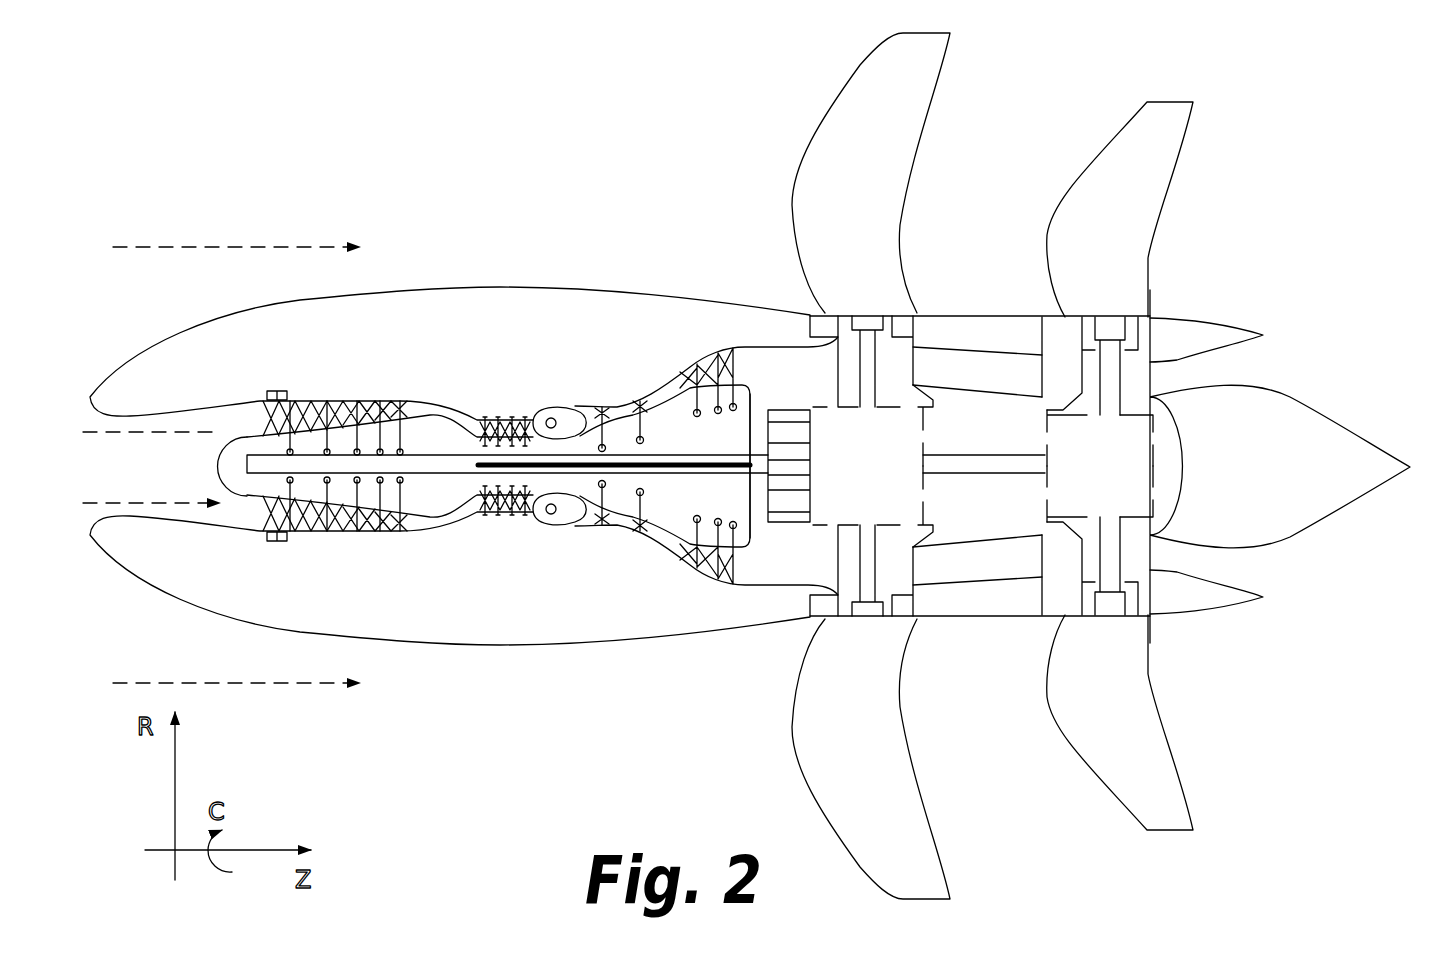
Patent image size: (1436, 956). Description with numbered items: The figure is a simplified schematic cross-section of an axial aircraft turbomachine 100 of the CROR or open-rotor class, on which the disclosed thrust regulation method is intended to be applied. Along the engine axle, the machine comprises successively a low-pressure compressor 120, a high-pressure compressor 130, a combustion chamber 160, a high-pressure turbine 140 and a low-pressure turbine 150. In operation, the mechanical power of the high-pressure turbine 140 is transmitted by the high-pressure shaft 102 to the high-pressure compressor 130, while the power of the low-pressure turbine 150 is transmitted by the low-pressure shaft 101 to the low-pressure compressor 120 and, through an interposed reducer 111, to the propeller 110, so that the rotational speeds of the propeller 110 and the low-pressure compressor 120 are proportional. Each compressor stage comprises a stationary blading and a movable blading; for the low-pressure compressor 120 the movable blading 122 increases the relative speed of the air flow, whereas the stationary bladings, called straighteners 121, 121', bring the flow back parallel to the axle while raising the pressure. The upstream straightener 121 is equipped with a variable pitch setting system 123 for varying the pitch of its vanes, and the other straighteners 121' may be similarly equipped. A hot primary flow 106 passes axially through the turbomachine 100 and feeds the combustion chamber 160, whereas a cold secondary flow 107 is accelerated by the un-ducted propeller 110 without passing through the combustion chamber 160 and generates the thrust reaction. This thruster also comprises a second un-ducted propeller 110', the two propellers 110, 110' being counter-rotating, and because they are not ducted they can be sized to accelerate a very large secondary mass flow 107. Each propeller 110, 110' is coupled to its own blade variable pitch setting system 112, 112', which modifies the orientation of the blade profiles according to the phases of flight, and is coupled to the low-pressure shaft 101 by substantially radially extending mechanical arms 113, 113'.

The aircraft turbomachine 100 is at (1337, 270).
The low-pressure shaft 101 is at (430, 476).
The high-pressure shaft 102 is at (682, 462).
The primary flow 106 is at (151, 465).
The secondary flow 107 is at (236, 453).
The propeller 110 is at (831, 466).
The second propeller 110' is at (1162, 466).
The reducer 111 is at (782, 503).
The blade variable pitch setting system 112 is at (971, 466).
The blade variable pitch setting system 112' is at (1228, 454).
The mechanical arms 113 is at (917, 420).
The mechanical arms 113' is at (1203, 466).
The low-pressure compressor 120 is at (245, 510).
The straightener 121 is at (268, 537).
The straighteners 121' is at (358, 537).
The movable blading 122 is at (400, 401).
The variable pitch setting system 123 is at (277, 391).
The high-pressure compressor 130 is at (497, 398).
The high-pressure turbine 140 is at (610, 541).
The low-pressure turbine 150 is at (737, 333).
The combustion chamber 160 is at (558, 538).